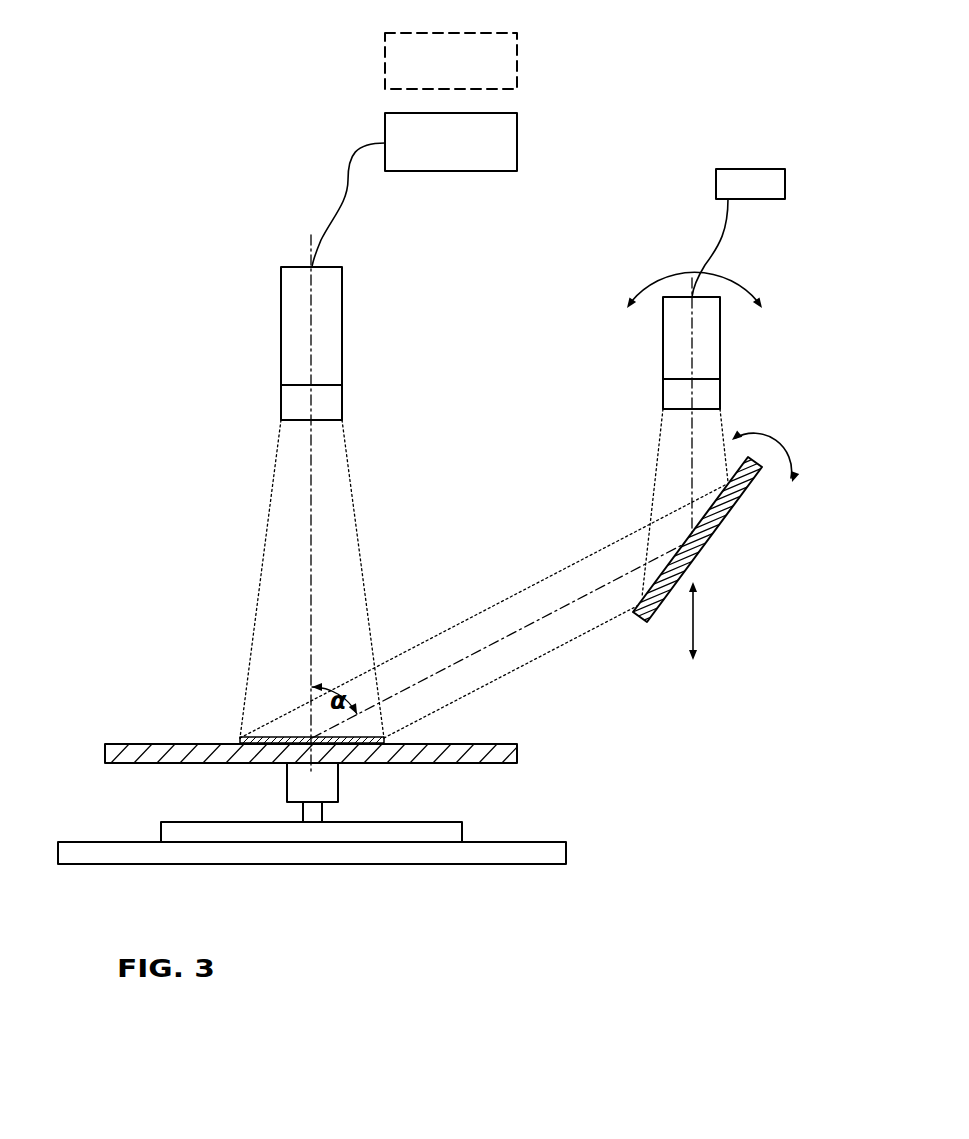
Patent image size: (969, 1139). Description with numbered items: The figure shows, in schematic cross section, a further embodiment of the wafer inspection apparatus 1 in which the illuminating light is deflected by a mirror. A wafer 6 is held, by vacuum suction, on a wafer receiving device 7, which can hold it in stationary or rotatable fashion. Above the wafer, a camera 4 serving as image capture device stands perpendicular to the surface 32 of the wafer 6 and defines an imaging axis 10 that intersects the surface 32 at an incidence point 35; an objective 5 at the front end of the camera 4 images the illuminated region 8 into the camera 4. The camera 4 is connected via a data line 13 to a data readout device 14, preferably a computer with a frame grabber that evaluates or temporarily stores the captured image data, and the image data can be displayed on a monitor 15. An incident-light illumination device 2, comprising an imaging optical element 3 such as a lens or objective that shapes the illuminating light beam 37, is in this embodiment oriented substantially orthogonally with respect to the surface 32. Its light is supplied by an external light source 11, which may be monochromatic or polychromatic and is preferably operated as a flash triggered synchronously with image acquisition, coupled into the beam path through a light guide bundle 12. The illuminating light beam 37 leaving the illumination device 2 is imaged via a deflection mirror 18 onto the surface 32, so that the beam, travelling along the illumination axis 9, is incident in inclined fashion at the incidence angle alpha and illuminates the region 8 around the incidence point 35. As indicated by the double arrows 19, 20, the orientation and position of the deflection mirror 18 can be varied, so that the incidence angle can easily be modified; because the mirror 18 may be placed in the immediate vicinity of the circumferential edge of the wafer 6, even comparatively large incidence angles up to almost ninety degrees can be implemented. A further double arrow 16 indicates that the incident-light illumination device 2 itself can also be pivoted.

The wafer inspection apparatus 1 is at (185, 352).
The incident-light illumination device 2 is at (710, 338).
The imaging optical element 3 is at (670, 395).
The camera 4 is at (332, 323).
The objective 5 is at (332, 405).
The wafer 6 is at (517, 752).
The wafer receiving device 7 is at (327, 782).
The illuminated region 8 is at (260, 738).
The illumination axis 9 is at (498, 632).
The imaging axis 10 is at (311, 487).
The external light source 11 is at (750, 169).
The light guide bundle 12 is at (722, 232).
The data line 13 is at (346, 185).
The data readout device 14 is at (517, 146).
The monitor 15 is at (517, 57).
The double arrow 16 is at (660, 283).
The deflection mirror 18 is at (722, 522).
The double arrow 19 is at (793, 440).
The double arrow 20 is at (697, 620).
The surface 32 is at (139, 736).
The incidence point 35 is at (312, 737).
The illuminating light beam 37 is at (533, 653).